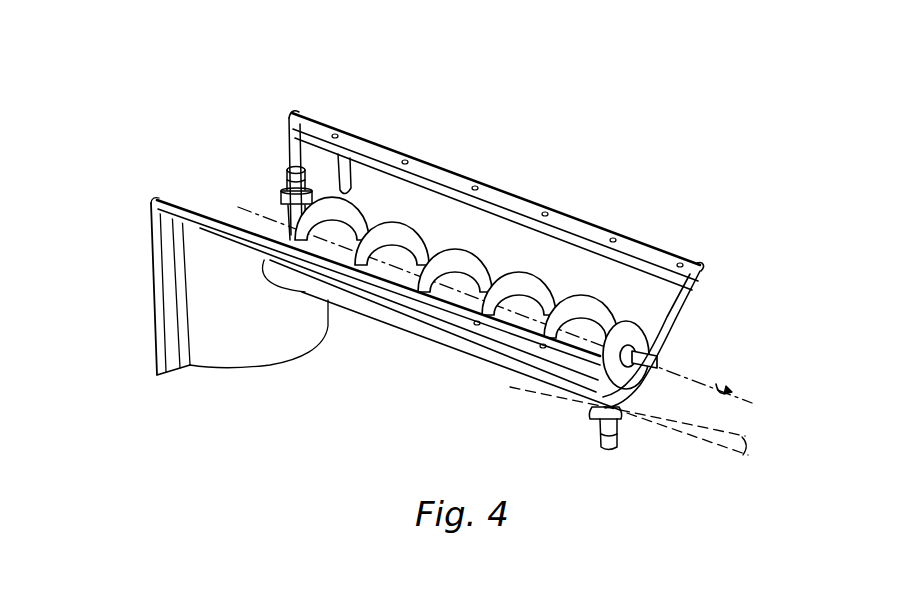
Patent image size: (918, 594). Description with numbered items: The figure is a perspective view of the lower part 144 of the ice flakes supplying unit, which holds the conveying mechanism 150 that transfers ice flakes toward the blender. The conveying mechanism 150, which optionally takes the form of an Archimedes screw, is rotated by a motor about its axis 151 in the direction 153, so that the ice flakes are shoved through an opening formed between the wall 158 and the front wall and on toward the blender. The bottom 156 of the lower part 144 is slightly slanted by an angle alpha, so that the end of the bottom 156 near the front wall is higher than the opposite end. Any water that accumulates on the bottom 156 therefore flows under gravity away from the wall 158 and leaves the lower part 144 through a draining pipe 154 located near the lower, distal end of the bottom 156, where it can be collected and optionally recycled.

The lower part 144 is at (200, 148).
The conveying mechanism 150 is at (473, 247).
The axis 151 is at (688, 378).
The direction 153 is at (716, 384).
The draining pipe 154 is at (609, 452).
The bottom 156 is at (418, 334).
The wall 158 is at (243, 356).